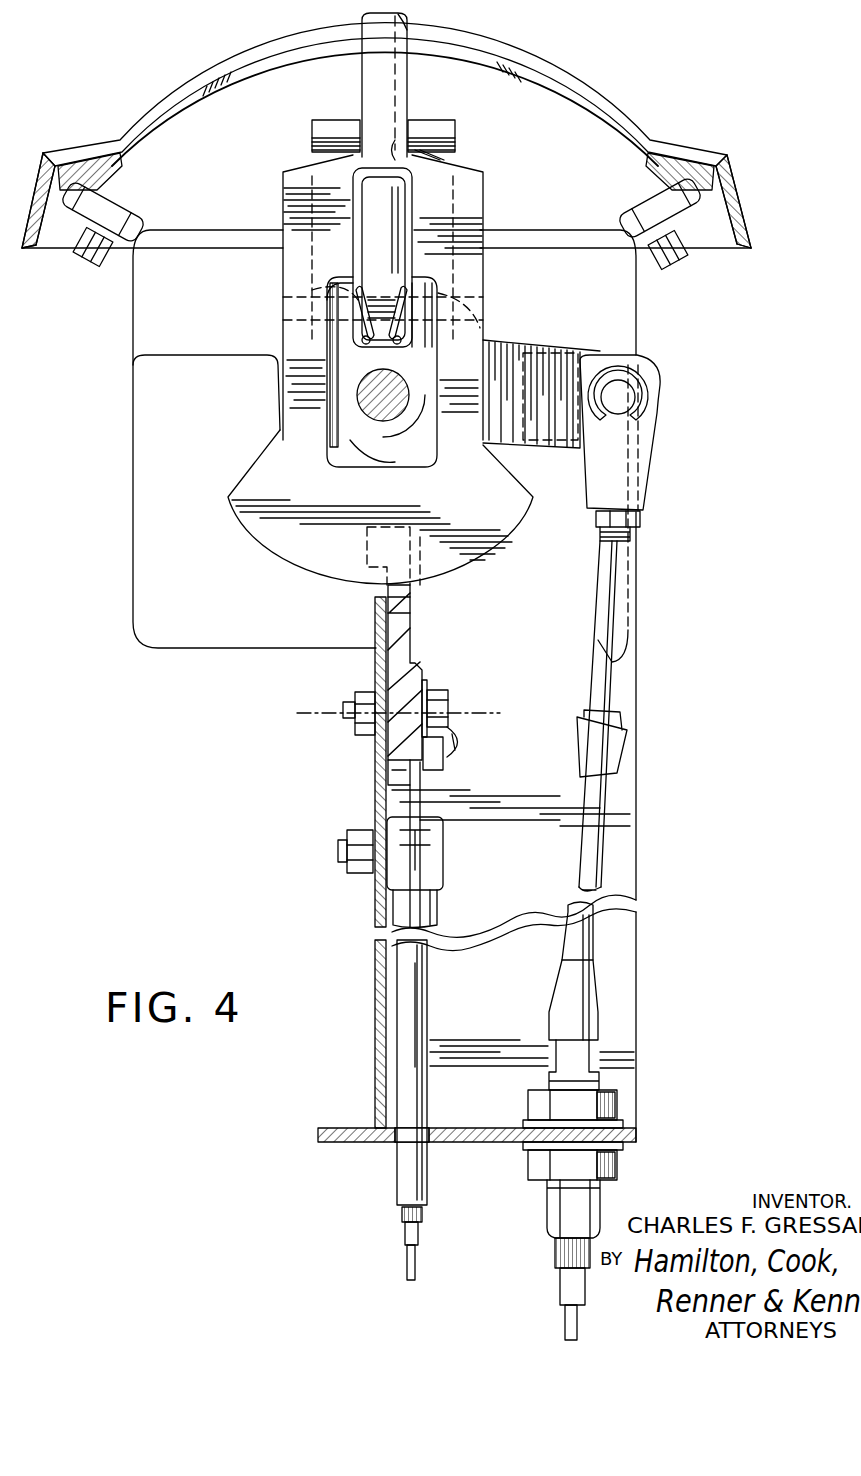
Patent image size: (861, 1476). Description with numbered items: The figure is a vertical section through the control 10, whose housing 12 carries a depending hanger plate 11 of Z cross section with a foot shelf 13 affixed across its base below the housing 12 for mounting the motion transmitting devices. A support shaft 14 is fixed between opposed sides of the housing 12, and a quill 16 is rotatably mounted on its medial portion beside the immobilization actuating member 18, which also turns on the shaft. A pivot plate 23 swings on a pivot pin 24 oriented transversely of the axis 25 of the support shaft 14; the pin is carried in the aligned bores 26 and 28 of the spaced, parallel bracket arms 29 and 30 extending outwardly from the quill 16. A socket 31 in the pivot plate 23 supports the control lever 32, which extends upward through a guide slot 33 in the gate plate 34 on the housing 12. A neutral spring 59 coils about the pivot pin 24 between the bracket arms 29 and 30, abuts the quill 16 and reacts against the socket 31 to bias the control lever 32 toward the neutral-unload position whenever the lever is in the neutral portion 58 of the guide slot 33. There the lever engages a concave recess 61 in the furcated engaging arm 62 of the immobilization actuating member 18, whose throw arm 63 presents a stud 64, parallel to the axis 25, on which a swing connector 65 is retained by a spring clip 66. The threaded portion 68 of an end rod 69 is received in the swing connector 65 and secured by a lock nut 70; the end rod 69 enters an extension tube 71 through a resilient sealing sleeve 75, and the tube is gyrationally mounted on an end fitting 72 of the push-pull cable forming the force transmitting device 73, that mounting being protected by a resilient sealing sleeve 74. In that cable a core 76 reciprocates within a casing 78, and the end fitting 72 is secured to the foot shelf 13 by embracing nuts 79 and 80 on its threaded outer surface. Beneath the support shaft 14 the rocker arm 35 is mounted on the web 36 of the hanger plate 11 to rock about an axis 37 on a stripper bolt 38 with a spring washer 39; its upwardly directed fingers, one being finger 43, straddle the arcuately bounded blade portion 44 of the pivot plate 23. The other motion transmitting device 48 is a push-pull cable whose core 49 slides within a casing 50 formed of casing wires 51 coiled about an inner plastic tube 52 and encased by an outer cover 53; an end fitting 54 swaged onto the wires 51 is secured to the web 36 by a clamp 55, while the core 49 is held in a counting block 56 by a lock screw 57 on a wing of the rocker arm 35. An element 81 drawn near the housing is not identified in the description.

The control 10 is at (712, 594).
The hanger plate 11 is at (374, 1082).
The housing 12 is at (735, 203).
The foot shelf 13 is at (345, 1135).
The support shaft 14 is at (386, 412).
The quill 16 is at (352, 428).
The immobilization actuating member 18 is at (543, 444).
The pivot plate 23 is at (297, 413).
The pivot pin 24 is at (378, 300).
The axis 25 is at (408, 388).
The bore 26 is at (312, 290).
The bore 28 is at (490, 300).
The bracket arm 29 is at (340, 290).
The bracket arm 30 is at (418, 280).
The socket 31 is at (455, 146).
The control lever 32 is at (388, 73).
The guide slot 33 is at (557, 91).
The gate plate 34 is at (655, 170).
The rocker arm 35 is at (416, 658).
The web 36 is at (376, 975).
The axis 37 is at (300, 714).
The stripper bolt 38 is at (388, 708).
The spring washer 39 is at (427, 692).
The finger 43 is at (362, 558).
The blade portion 44 is at (307, 546).
The motion transmitting device 48 is at (434, 1006).
The core 49 is at (420, 812).
The casing 50 is at (431, 1100).
The casing wires 51 is at (402, 1215).
The inner flexible plastic tube 52 is at (405, 1237).
The outer cover 53 is at (405, 1183).
The end fitting 54 is at (440, 908).
The clamp 55 is at (445, 848).
The counting block 56 is at (440, 770).
The lock screw 57 is at (466, 748).
The neutral portion 58 is at (410, 42).
The neutral spring 59 is at (412, 192).
The concave recess 61 is at (410, 108).
The furcated engaging arm 62 is at (440, 153).
The throw arm 63 is at (560, 365).
The stud 64 is at (630, 398).
The swing connector 65 is at (648, 460).
The spring clip 66 is at (628, 375).
The threaded portion 68 is at (604, 536).
The end rod 69 is at (607, 683).
The lock nut 70 is at (638, 517).
The extension tube 71 is at (582, 852).
The end fitting 72 is at (590, 1055).
The force transmitting device 73 is at (553, 1275).
The resilient sealing sleeve 74 is at (597, 1021).
The resilient sealing sleeve 75 is at (612, 761).
The core 76 is at (565, 1328).
The casing 78 is at (549, 1253).
The nut 79 is at (612, 1110).
The nut 80 is at (612, 1170).
The bolt 81 is at (243, 75).